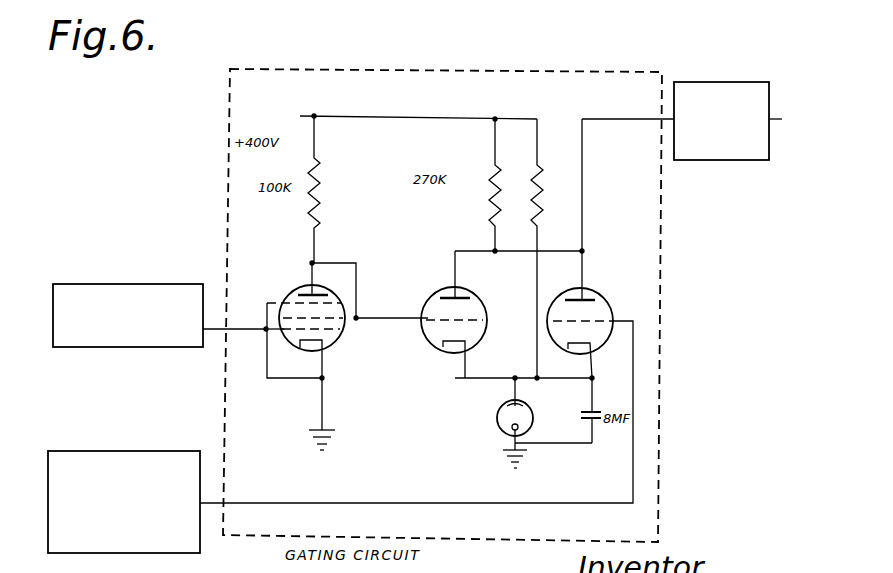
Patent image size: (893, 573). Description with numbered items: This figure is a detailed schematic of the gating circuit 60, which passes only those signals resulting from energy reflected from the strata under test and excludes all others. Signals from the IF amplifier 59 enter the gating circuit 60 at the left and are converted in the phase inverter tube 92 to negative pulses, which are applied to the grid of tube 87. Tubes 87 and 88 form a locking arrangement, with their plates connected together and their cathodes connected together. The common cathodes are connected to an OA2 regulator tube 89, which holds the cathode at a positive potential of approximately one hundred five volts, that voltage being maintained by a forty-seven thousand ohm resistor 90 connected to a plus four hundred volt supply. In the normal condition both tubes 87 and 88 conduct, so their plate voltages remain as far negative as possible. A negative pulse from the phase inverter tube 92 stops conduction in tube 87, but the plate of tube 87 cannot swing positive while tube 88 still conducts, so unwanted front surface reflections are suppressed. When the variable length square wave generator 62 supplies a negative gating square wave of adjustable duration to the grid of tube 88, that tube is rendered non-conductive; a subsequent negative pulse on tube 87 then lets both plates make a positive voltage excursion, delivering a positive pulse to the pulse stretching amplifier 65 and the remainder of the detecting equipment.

The IF amplifier 59 is at (108, 284).
The gating circuit 60 is at (462, 72).
The variable length square wave generator 62 is at (95, 451).
The pulse stretching amplifier 65 is at (704, 82).
The locking tube 87 is at (474, 310).
The locking tube 88 is at (597, 300).
The OA2 regulator tube 89 is at (524, 420).
The 47K resistor 90 is at (538, 210).
The phase inverter tube 92 is at (340, 300).